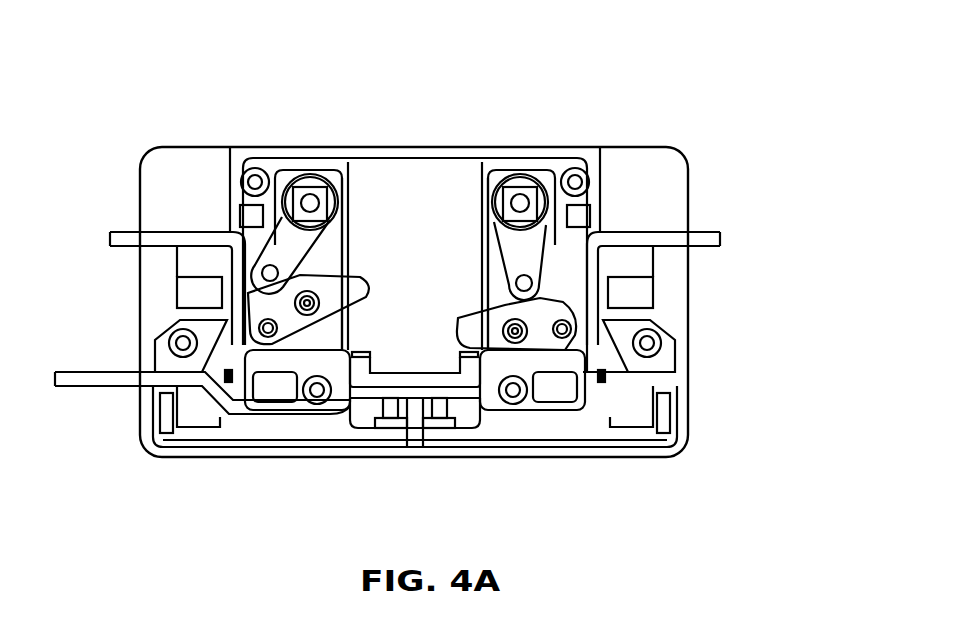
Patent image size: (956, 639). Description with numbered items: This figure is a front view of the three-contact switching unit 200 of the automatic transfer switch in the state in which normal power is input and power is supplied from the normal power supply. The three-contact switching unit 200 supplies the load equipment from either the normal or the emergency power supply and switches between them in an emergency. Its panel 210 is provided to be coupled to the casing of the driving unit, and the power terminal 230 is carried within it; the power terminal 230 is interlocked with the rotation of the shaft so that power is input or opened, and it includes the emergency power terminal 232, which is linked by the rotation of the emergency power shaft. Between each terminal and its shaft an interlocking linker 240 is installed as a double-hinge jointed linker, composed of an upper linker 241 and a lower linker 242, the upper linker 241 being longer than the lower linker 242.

The three-contact switching unit 200 is at (467, 231).
The panel 210 is at (636, 140).
The power terminal 230 is at (285, 320).
The emergency power terminal 232 is at (415, 379).
The interlocking linker 240 is at (277, 240).
The upper linker 241 is at (532, 262).
The lower linker 242 is at (530, 316).